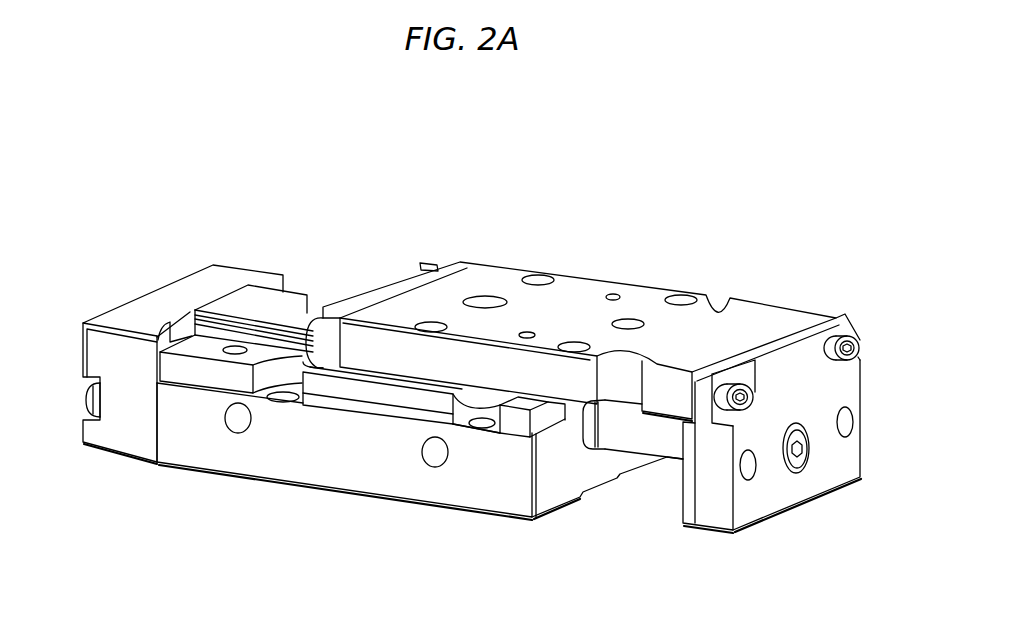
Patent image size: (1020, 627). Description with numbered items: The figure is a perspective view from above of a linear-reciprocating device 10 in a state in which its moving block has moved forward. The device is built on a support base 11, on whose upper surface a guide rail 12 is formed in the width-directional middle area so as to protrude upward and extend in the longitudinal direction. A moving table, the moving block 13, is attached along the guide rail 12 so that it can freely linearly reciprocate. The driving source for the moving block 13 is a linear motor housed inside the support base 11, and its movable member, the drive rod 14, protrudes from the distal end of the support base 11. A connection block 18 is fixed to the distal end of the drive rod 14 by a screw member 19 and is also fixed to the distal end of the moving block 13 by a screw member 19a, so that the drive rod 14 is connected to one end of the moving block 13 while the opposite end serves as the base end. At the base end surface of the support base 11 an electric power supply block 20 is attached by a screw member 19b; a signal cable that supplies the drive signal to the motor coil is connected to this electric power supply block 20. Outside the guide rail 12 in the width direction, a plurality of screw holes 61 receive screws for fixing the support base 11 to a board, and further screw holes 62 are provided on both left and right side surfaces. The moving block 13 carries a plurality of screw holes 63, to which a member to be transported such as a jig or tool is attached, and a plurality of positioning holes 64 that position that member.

The linear-reciprocating device 10 is at (703, 241).
The support base 11 is at (330, 452).
The guide rail 12 is at (302, 298).
The moving block 13 is at (588, 295).
The drive rod 14 is at (642, 434).
The connection block 18 is at (758, 500).
The screw member 19 is at (800, 468).
The screw member 19a is at (744, 383).
The screw member 19b is at (88, 390).
The electric power supply block 20 is at (134, 413).
The screw holes 61 is at (276, 400).
The screw holes 62 is at (234, 421).
The screw holes 63 is at (540, 274).
The positioning holes 64 is at (485, 297).